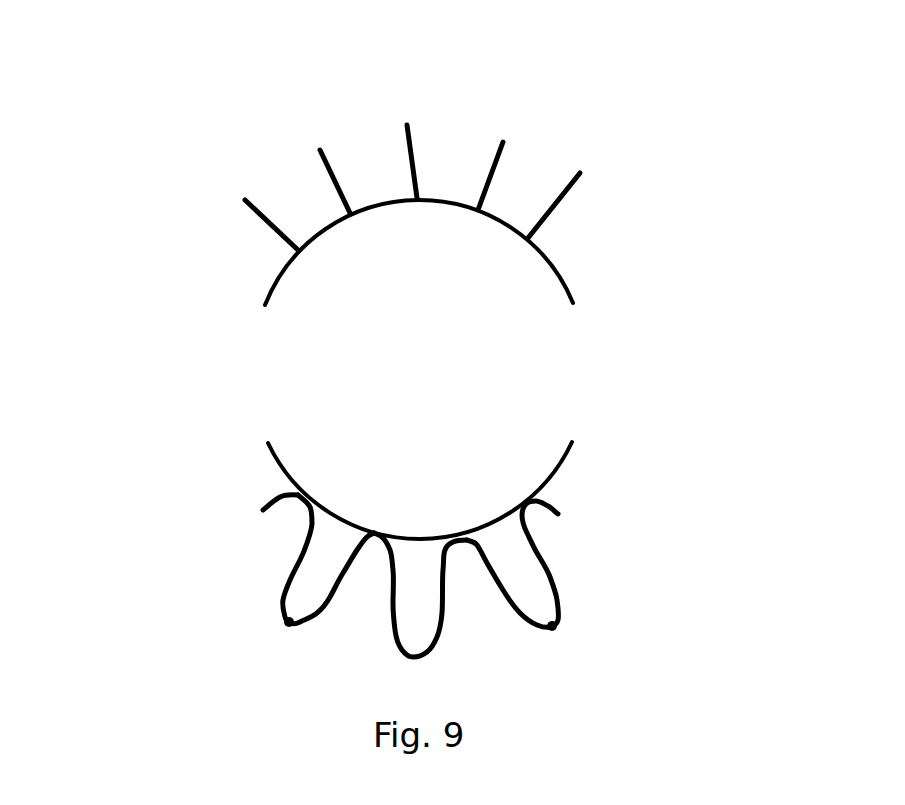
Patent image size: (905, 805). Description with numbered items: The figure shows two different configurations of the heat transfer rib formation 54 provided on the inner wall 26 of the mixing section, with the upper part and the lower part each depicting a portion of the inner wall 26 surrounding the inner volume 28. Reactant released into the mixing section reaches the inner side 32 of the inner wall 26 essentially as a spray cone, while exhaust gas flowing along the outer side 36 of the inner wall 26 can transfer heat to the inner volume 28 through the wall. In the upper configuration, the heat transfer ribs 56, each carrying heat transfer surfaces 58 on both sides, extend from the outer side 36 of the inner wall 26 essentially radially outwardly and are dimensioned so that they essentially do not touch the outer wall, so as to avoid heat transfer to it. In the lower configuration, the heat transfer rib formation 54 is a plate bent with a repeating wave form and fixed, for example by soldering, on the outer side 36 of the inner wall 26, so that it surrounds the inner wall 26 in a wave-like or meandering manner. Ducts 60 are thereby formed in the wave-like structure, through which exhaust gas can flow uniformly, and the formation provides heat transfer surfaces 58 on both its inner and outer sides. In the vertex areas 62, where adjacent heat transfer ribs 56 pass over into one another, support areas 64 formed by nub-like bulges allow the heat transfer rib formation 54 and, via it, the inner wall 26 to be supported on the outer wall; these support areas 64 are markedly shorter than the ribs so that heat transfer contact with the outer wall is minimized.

The inner wall 26 is at (657, 233).
The inner volume 28 is at (688, 308).
The inner side 32 is at (141, 347).
The outer side 36 is at (131, 267).
The heat transfer rib formation 54 is at (384, 374).
The heat transfer ribs 56 is at (226, 86).
The heat transfer surfaces 58 is at (356, 49).
The ducts 60 is at (537, 590).
The vertex areas 62 is at (285, 617).
The support areas 64 is at (442, 668).